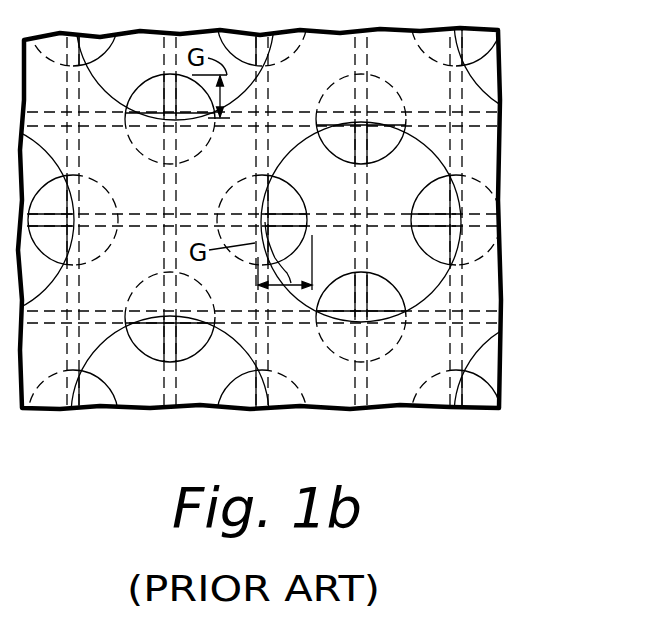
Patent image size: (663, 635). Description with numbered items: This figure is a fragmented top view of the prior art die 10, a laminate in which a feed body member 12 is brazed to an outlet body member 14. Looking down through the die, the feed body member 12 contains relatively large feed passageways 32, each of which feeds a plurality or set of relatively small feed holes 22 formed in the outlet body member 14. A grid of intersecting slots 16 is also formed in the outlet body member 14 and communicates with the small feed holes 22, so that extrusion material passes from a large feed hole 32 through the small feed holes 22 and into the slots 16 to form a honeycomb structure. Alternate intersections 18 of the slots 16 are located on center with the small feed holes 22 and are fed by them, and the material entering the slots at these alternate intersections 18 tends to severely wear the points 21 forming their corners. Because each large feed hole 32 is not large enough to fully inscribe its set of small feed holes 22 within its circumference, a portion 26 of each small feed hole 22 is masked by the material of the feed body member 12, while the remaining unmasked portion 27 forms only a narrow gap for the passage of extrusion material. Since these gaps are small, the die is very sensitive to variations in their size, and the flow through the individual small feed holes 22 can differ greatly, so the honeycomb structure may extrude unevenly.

The prior art die 10 is at (498, 133).
The feed body member 12 is at (482, 160).
The outlet body member 14 is at (423, 280).
The intersecting slots 16 is at (441, 229).
The alternate intersections 18 is at (278, 208).
The points 21 is at (273, 216).
The small feed holes 22 is at (432, 243).
The masked portion 26 is at (323, 96).
The unmasked portion 27 is at (290, 234).
The large feed passageways 32 is at (418, 147).